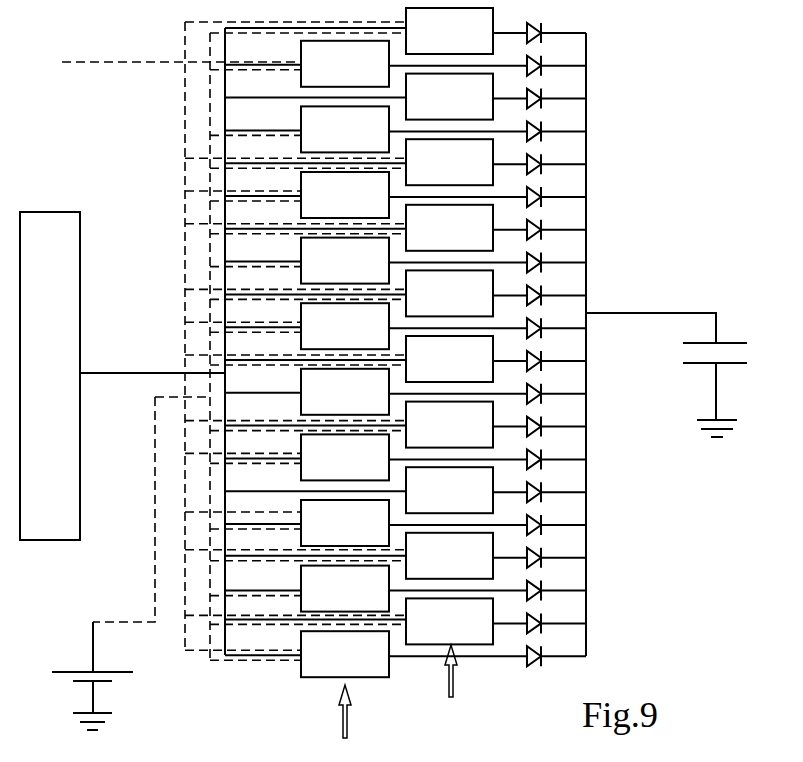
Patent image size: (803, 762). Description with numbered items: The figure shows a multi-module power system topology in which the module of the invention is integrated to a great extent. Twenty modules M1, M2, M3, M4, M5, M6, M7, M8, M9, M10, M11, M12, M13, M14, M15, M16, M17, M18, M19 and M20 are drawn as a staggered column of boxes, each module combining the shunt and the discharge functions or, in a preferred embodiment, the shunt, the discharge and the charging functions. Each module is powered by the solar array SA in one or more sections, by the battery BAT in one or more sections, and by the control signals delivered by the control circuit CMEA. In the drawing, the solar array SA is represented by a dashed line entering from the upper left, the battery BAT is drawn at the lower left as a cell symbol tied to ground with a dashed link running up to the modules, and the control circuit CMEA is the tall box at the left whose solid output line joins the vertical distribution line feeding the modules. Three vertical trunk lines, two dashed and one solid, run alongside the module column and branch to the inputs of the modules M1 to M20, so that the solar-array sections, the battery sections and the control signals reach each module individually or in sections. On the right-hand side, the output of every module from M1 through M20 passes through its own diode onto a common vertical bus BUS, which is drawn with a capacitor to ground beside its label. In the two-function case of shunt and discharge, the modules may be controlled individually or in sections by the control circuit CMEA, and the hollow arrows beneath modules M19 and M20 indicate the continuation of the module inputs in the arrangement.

The module M1 is at (385, 31).
The module M2 is at (398, 64).
The module M3 is at (405, 97).
The module M4 is at (398, 129).
The module M5 is at (385, 162).
The module M6 is at (385, 195).
The module M7 is at (385, 228).
The module M8 is at (398, 261).
The module M9 is at (385, 293).
The module M10 is at (385, 326).
The module M11 is at (385, 359).
The module M12 is at (405, 392).
The module M13 is at (385, 425).
The module M14 is at (385, 457).
The module M15 is at (405, 490).
The module M16 is at (385, 523).
The module M17 is at (385, 556).
The module M18 is at (398, 589).
The module M19 is at (385, 647).
The module M20 is at (385, 684).
The solar array SA is at (180, 49).
The battery BAT is at (131, 563).
The bus BUS is at (683, 344).
The control circuit CMEA is at (122, 376).